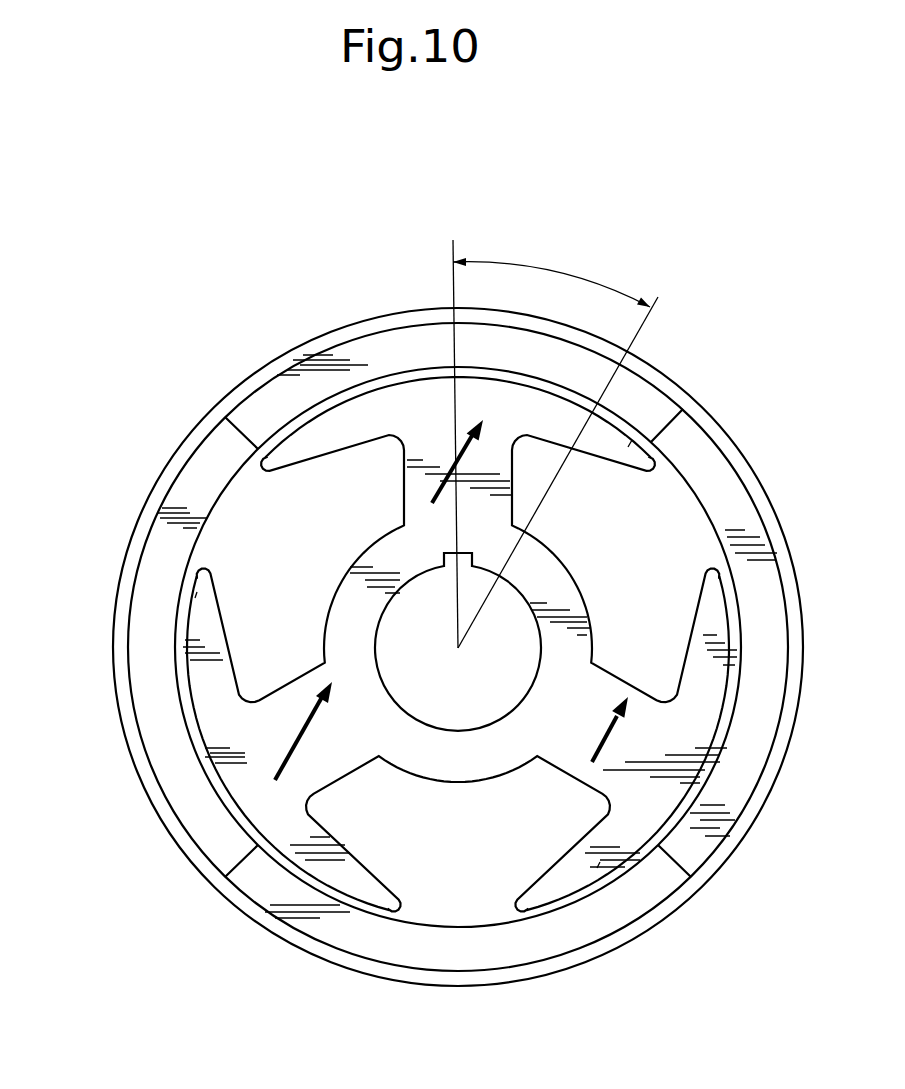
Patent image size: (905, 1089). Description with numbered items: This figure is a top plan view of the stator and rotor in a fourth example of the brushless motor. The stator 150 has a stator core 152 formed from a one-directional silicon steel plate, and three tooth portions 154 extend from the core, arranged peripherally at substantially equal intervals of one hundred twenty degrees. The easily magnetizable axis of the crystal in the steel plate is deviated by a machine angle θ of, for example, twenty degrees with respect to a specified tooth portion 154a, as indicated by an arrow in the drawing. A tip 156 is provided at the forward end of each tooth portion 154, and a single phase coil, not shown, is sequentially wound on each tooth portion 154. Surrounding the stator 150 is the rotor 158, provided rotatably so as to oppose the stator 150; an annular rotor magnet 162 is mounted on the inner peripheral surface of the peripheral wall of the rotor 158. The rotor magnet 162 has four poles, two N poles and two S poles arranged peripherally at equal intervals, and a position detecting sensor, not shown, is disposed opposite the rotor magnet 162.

The stator 150 is at (752, 607).
The stator core 152 is at (590, 587).
The tooth portions 154 is at (333, 763).
The specified tooth portion 154a is at (403, 465).
The tip 156 is at (628, 447).
The rotor 158 is at (152, 836).
The rotor magnet 162 is at (413, 958).